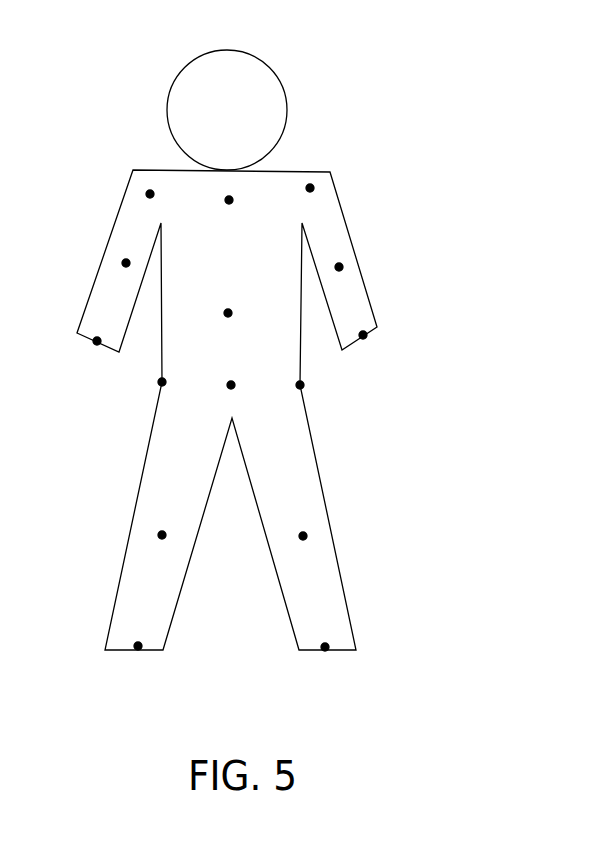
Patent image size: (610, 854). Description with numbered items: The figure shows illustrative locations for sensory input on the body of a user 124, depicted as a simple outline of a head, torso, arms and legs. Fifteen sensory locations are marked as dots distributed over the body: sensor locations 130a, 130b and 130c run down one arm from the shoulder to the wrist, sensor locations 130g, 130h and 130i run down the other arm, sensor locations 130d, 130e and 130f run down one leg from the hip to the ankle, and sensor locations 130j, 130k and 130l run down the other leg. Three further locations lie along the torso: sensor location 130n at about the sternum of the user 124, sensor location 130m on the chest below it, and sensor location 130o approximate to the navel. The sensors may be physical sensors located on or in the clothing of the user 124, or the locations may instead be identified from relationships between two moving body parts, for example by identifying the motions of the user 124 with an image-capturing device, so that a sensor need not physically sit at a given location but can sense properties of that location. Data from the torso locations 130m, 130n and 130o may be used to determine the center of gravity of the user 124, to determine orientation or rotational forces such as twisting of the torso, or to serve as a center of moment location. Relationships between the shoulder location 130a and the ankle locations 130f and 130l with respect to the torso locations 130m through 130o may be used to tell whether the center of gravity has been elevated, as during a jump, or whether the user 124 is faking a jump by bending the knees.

The user 124 is at (322, 98).
The sensor location 130a is at (137, 190).
The sensor location 130b is at (115, 258).
The sensor location 130c is at (92, 337).
The sensor location 130d is at (152, 388).
The sensor location 130e is at (148, 527).
The sensor location 130f is at (122, 638).
The sensor location 130g is at (320, 178).
The sensor location 130h is at (353, 258).
The sensor location 130i is at (368, 327).
The sensor location 130j is at (312, 390).
The sensor location 130k is at (320, 530).
The sensor location 130l is at (335, 640).
The sensor location 130m is at (222, 307).
The sensor location 130n is at (225, 203).
The sensor location 130o is at (223, 378).